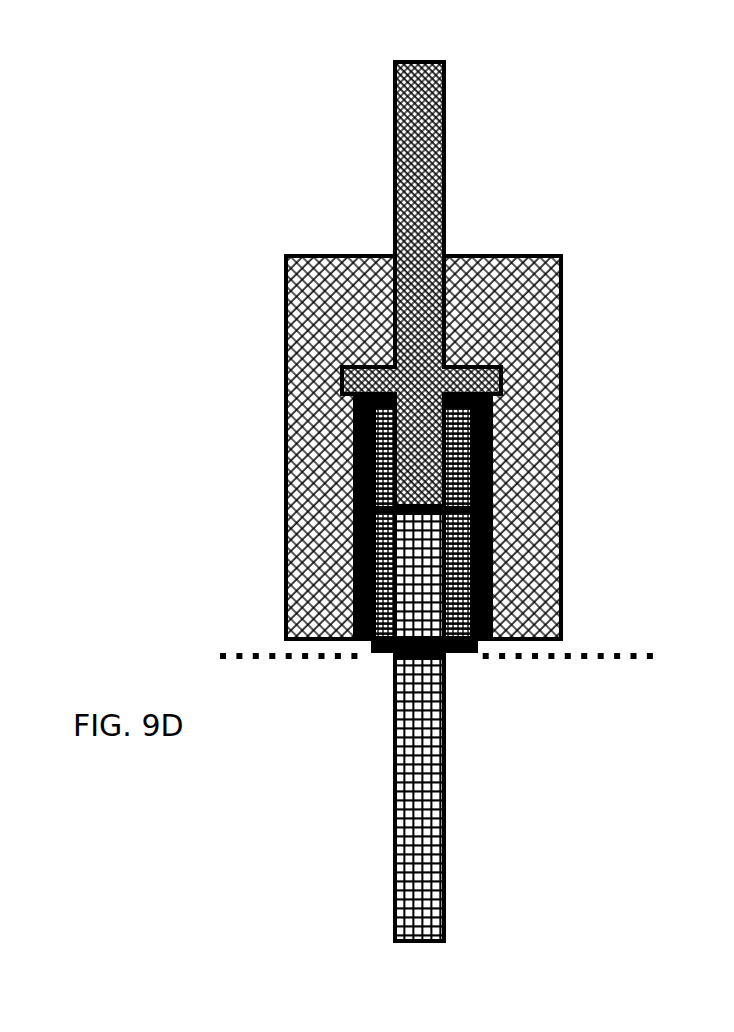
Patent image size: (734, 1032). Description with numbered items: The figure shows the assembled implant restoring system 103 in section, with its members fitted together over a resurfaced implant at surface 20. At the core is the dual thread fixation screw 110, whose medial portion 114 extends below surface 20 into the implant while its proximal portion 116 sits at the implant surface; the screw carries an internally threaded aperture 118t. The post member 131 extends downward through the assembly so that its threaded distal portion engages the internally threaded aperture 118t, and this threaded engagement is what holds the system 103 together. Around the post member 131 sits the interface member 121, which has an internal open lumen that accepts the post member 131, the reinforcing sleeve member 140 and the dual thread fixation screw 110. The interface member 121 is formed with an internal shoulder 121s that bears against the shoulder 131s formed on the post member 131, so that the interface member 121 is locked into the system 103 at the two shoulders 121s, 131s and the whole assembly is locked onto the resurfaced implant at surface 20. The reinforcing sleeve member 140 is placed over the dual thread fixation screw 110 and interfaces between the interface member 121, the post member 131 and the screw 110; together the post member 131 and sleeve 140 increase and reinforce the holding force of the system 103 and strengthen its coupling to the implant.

The implant restoring system 103 is at (218, 170).
The post member 131 is at (439, 78).
The shoulder 131s is at (332, 364).
The interface member 121 is at (556, 284).
The internal shoulder 121s is at (343, 408).
The reinforcing sleeve member 140 is at (448, 473).
The surface 20 is at (617, 642).
The dual thread fixation screw 110 is at (316, 804).
The medial portion 114 is at (445, 837).
The proximal portion 116 is at (448, 600).
The internally threaded aperture 118t is at (393, 600).